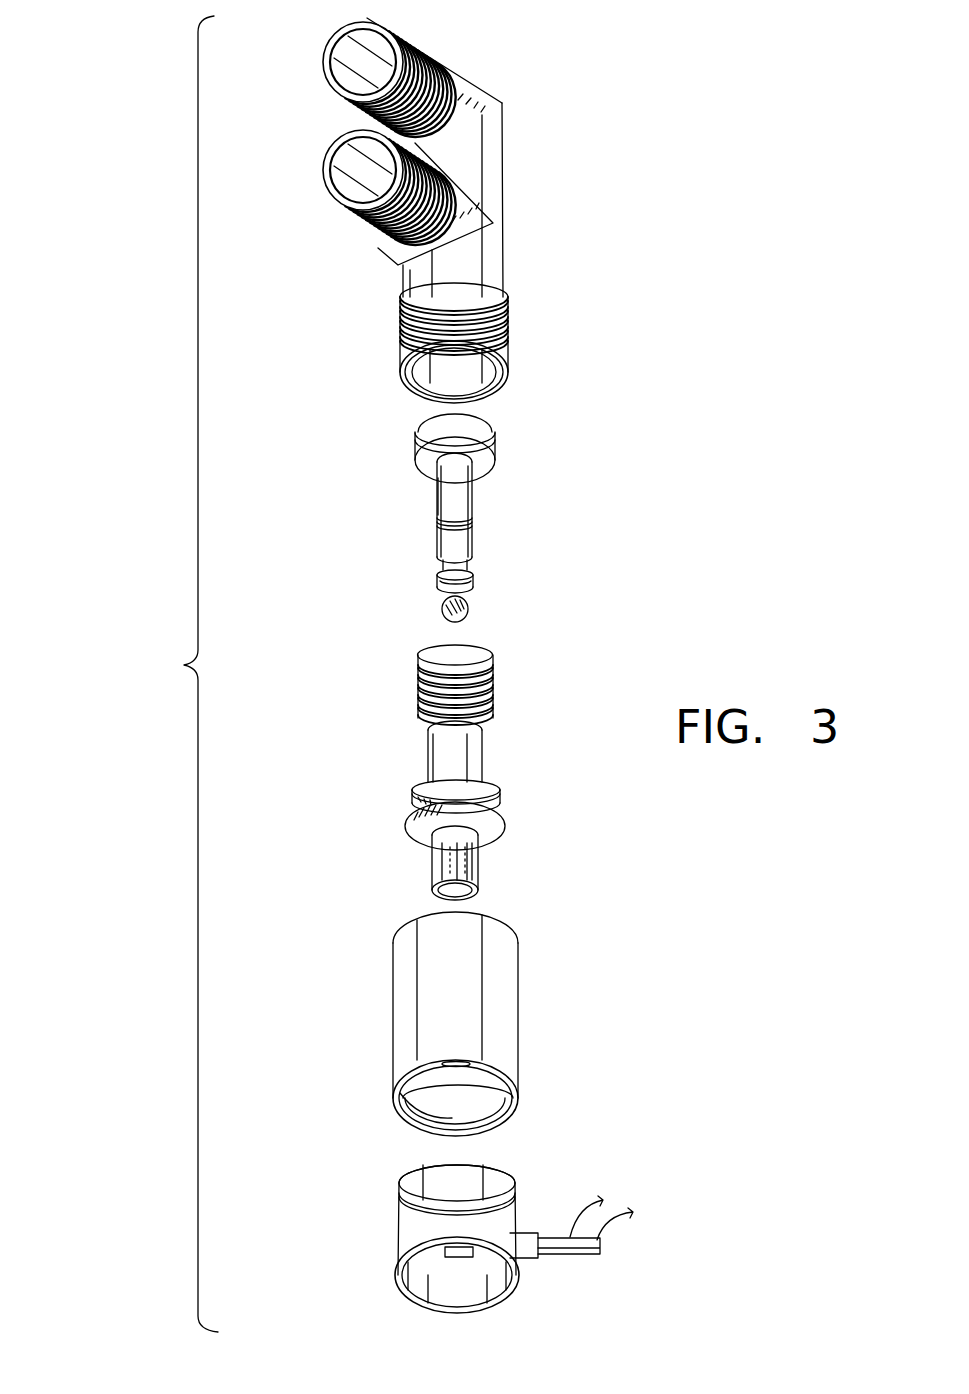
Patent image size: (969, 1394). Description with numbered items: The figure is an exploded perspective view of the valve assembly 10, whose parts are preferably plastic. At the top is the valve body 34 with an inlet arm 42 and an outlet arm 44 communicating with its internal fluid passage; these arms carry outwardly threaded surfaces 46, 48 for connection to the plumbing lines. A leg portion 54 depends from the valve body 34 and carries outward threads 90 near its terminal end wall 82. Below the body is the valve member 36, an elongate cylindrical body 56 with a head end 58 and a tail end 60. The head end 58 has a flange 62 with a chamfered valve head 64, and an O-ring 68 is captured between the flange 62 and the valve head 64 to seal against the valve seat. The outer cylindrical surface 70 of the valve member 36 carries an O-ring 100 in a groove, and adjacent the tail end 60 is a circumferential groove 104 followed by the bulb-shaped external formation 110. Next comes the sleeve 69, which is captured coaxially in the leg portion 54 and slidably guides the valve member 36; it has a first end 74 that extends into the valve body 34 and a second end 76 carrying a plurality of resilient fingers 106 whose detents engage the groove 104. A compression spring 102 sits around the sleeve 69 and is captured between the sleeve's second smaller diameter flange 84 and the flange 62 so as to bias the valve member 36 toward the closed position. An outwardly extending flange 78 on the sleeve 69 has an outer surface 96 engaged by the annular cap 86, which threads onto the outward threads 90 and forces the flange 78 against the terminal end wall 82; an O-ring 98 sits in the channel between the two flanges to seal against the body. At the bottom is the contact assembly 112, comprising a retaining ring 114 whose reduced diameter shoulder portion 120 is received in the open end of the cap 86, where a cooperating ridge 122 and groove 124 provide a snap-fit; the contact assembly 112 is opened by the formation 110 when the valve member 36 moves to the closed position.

The valve assembly 10 is at (152, 638).
The valve body 34 is at (432, 210).
The valve member 36 is at (468, 795).
The inlet arm 42 is at (425, 197).
The outlet arm 44 is at (403, 77).
The outwardly threaded surface 46 is at (355, 123).
The outwardly threaded surface 48 is at (363, 240).
The leg portion 54 is at (497, 263).
The elongate cylindrical body 56 is at (440, 496).
The head end 58 is at (386, 505).
The tail end 60 is at (440, 579).
The flange 62 is at (486, 462).
The valve head 64 is at (476, 446).
The O-ring 68 is at (420, 432).
The sleeve 69 is at (459, 781).
The outer cylindrical surface 70 is at (470, 534).
The first end 74 is at (445, 729).
The second end 76 is at (451, 872).
The flange 78 is at (474, 842).
The terminal end wall 82 is at (503, 386).
The second smaller diameter flange 84 is at (420, 785).
The annular cap 86 is at (460, 1024).
The outward threads 90 is at (509, 322).
The outer surface 96 is at (418, 835).
The O-ring 98 is at (458, 795).
The O-ring 100 is at (437, 521).
The compression spring 102 is at (480, 685).
The circumferential groove 104 is at (459, 589).
The resilient fingers 106 is at (440, 872).
The external formation 110 is at (438, 607).
The contact assembly 112 is at (549, 1270).
The retaining ring 114 is at (462, 1233).
The shoulder portion 120 is at (446, 893).
The ridge 122 is at (480, 1195).
The groove 124 is at (400, 1080).